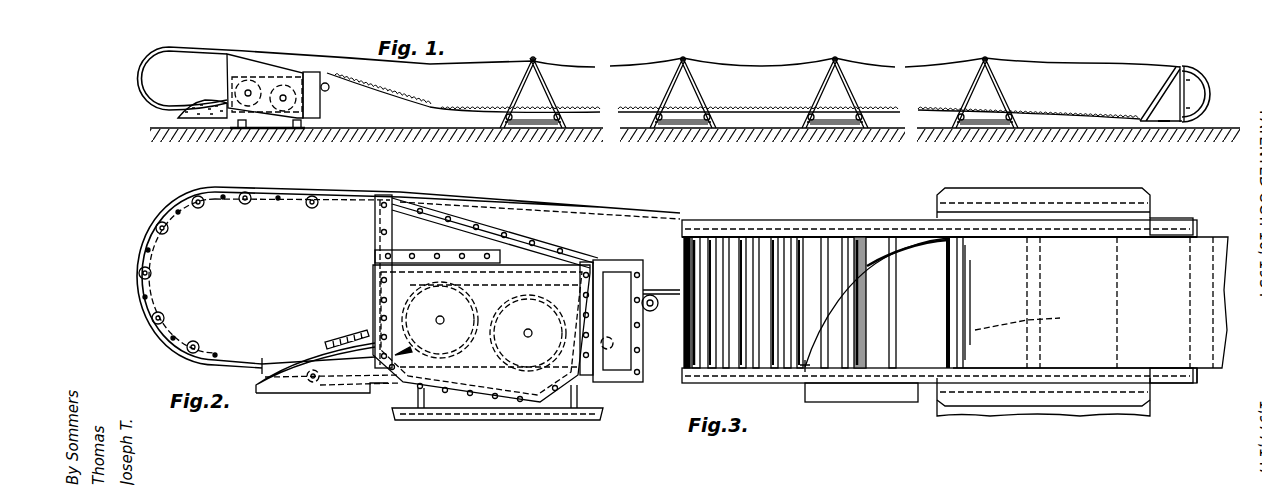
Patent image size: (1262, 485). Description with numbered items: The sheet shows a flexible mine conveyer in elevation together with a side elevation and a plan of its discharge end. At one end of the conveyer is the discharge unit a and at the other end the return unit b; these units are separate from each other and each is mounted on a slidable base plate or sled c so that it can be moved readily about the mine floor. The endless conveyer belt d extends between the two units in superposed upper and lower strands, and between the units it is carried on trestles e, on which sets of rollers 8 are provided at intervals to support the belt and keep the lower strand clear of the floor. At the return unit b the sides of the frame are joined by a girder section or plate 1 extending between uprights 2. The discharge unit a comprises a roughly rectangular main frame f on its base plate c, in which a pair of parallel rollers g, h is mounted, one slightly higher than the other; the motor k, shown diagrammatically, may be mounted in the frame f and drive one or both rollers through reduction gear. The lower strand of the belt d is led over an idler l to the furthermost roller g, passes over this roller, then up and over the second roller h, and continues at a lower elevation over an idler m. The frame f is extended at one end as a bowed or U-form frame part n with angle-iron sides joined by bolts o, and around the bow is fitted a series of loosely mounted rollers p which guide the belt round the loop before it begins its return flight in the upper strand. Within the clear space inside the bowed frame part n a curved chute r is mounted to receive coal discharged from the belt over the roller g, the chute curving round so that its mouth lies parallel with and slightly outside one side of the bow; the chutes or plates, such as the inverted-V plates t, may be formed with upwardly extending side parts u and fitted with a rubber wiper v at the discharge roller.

In FIG. 1, the discharge unit a is at (270, 64).
In FIG. 2, the discharge unit a is at (497, 331).
In FIG. 1, the return unit b is at (1162, 82).
In FIG. 1, the base plate c is at (266, 130).
In FIG. 2, the base plate c is at (392, 412).
In FIG. 3, the base plate c is at (940, 202).
In FIG. 1, the endless conveyer belt d is at (430, 66).
In FIG. 2, the endless conveyer belt d is at (298, 194).
In FIG. 3, the endless conveyer belt d is at (691, 242).
In FIG. 1, the trestle e is at (510, 96).
In FIG. 2, the main frame f is at (378, 227).
In FIG. 2, the roller g is at (440, 320).
In FIG. 3, the roller g is at (966, 276).
In FIG. 2, the second roller h is at (497, 342).
In FIG. 3, the second roller h is at (966, 329).
In FIG. 2, the motor k is at (643, 355).
In FIG. 1, the idler l is at (329, 90).
In FIG. 2, the idler l is at (656, 306).
In FIG. 3, the idler l is at (1203, 362).
In FIG. 2, the idler m is at (313, 382).
In FIG. 2, the bowed frame part n is at (248, 205).
In FIG. 3, the bowed frame part n is at (834, 243).
In FIG. 2, the bolts o is at (178, 215).
In FIG. 3, the bolts o is at (890, 245).
In FIG. 2, the rollers p is at (205, 205).
In FIG. 3, the rollers p is at (771, 242).
In FIG. 3, the curved chute r is at (830, 332).
In FIG. 2, the plates or chutes t is at (336, 352).
In FIG. 2, the side parts u is at (312, 356).
In FIG. 3, the side parts u is at (830, 308).
In FIG. 2, the rubber wiper v is at (415, 352).
In FIG. 1, the girder section or plate 1 is at (1164, 107).
In FIG. 1, the uprights 2 is at (1190, 92).
In FIG. 1, the sets of rollers 8 is at (686, 58).